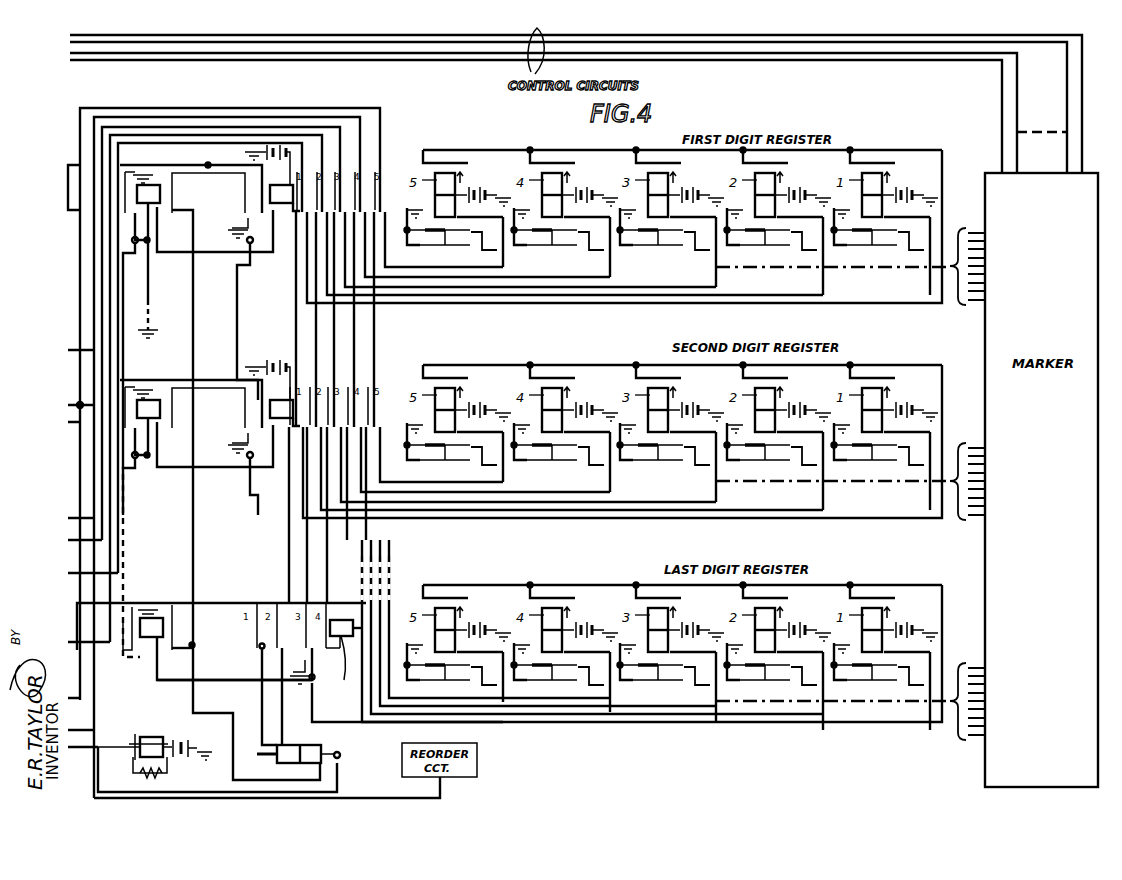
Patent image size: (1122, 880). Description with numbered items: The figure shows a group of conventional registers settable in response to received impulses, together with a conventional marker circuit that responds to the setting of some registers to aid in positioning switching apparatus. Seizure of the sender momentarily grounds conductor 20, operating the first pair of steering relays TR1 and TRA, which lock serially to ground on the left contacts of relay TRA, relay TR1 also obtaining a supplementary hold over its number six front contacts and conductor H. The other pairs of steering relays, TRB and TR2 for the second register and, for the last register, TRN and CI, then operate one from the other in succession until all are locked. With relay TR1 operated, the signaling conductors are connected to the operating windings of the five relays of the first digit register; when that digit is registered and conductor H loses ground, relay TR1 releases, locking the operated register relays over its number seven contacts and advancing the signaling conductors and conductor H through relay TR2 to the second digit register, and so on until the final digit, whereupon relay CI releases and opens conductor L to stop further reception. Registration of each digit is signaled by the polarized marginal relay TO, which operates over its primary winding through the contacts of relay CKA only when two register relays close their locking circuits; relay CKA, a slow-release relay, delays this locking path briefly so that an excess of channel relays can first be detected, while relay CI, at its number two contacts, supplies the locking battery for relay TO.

The conductor 20 is at (148, 282).
The steering relay TRA is at (158, 195).
The steering relay TRB is at (154, 400).
The steering relay TR1 is at (287, 205).
The steering relay TR2 is at (290, 400).
The steering relay TRN is at (152, 640).
The slow-release relay CKA is at (150, 740).
The relay CI is at (344, 661).
The polarized marginal relay TO is at (318, 745).